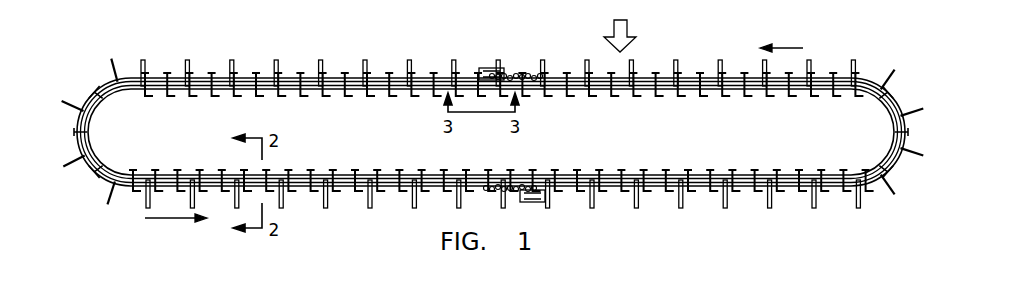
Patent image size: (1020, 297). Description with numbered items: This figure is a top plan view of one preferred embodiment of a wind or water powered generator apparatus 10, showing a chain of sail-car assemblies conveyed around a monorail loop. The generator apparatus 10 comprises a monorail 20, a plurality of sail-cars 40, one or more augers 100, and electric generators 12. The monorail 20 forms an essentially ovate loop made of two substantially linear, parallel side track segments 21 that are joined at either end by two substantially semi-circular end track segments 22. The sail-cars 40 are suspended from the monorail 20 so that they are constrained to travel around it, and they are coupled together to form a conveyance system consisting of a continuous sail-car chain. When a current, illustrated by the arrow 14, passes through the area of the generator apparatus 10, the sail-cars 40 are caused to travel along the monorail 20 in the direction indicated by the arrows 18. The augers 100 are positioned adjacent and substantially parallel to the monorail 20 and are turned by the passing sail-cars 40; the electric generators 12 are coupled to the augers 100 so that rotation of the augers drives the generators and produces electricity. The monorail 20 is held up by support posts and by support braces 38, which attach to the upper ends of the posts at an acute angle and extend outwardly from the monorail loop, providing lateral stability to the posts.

The generator apparatus 10 is at (124, 43).
The electric generator 12 is at (487, 68).
The arrow 14 is at (631, 28).
The arrows 18 is at (786, 48).
The monorail 20 is at (656, 107).
The side track segment 21 is at (366, 88).
The end track segment 22 is at (97, 124).
The support brace 38 is at (641, 196).
The sail-car 40 is at (604, 191).
The auger 100 is at (531, 70).